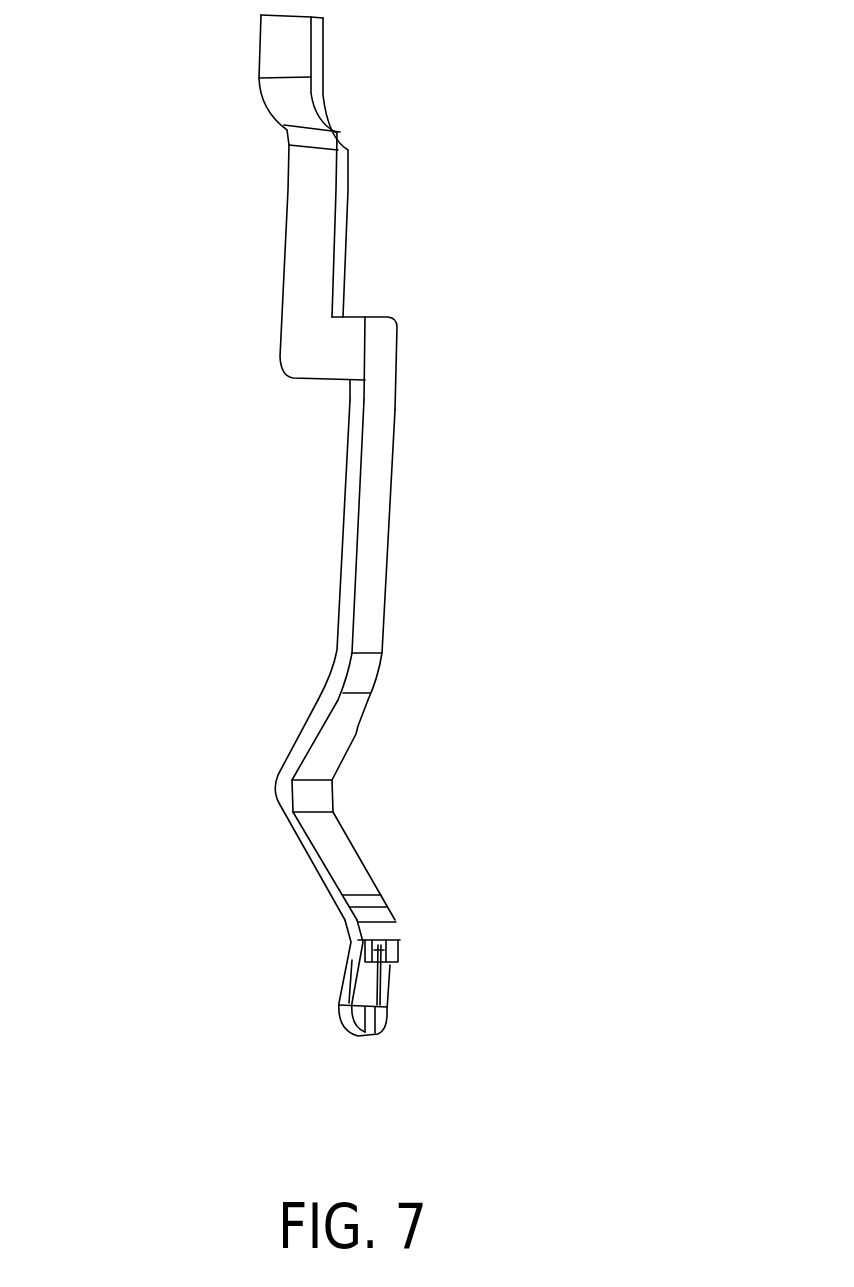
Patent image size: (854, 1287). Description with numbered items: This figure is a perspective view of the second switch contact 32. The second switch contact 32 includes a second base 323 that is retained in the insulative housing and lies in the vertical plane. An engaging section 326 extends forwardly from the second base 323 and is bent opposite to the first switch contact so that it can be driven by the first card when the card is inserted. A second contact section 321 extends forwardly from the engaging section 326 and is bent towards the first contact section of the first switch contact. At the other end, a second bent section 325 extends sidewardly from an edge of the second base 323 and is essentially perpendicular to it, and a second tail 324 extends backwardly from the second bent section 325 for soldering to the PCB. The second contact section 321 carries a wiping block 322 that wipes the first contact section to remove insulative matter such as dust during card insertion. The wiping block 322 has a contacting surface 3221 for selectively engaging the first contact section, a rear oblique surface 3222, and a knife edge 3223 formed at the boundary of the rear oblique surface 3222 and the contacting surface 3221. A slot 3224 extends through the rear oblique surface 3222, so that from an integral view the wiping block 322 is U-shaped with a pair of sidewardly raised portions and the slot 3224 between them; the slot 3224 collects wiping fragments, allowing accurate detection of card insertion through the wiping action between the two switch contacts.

The second switch contact 32 is at (186, 122).
The second tail 324 is at (290, 57).
The second bent section 325 is at (348, 348).
The second base 323 is at (372, 575).
The engaging section 326 is at (310, 797).
The wiping block 322 is at (385, 985).
The second contact section 321 is at (352, 957).
The contacting surface 3221 is at (348, 990).
The rear oblique surface 3222 is at (398, 938).
The knife edge 3223 is at (355, 935).
The slot 3224 is at (393, 958).